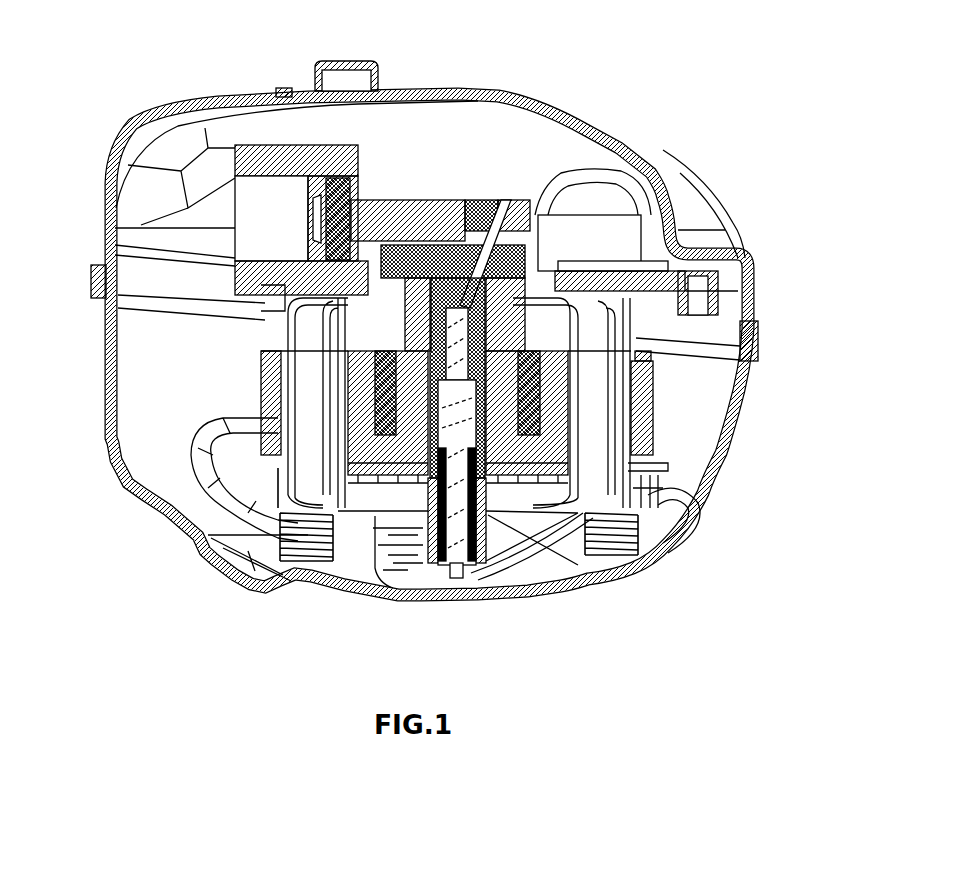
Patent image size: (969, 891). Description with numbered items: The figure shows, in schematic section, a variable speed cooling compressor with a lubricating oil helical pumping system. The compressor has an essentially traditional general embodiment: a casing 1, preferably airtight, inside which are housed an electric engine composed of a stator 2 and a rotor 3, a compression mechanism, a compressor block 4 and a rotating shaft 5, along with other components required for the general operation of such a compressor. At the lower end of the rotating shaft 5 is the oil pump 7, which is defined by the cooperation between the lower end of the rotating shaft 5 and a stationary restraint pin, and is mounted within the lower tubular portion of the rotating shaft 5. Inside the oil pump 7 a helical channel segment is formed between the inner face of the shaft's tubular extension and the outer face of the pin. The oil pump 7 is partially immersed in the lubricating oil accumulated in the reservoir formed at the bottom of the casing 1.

The casing 1 is at (572, 124).
The stator 2 is at (633, 413).
The rotor 3 is at (520, 390).
The compressor block 4 is at (660, 267).
The rotating shaft 5 is at (440, 263).
The oil pump 7 is at (565, 545).